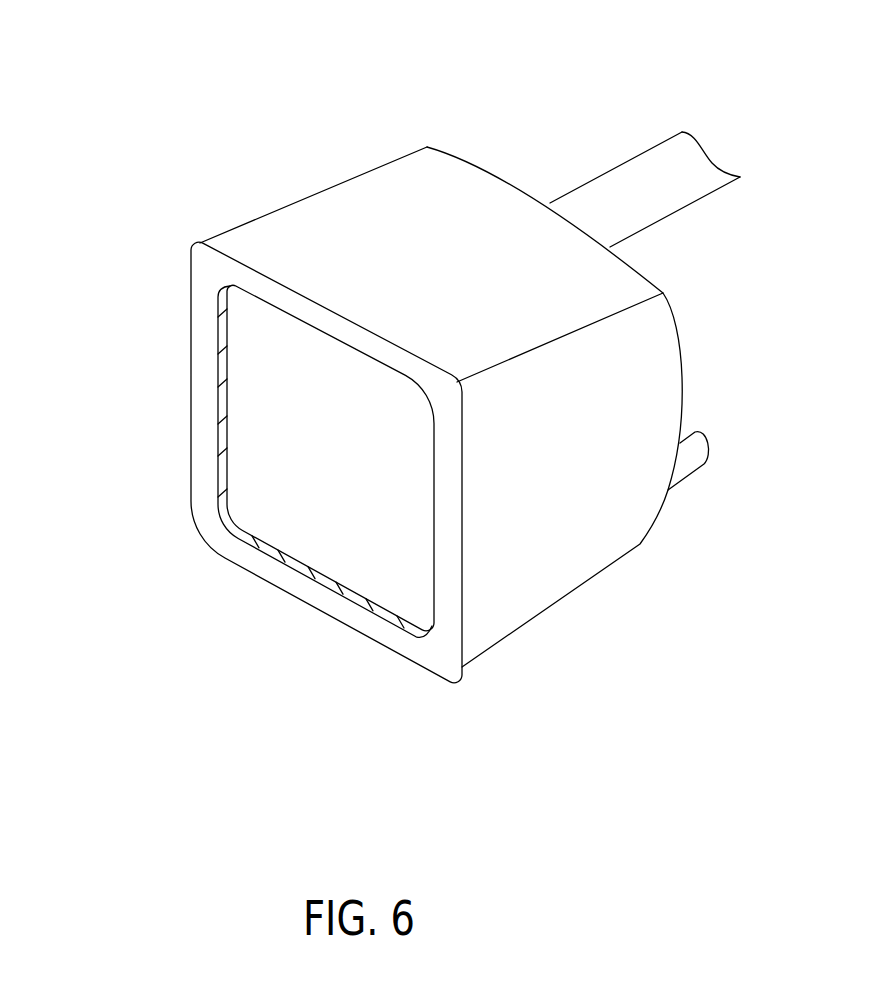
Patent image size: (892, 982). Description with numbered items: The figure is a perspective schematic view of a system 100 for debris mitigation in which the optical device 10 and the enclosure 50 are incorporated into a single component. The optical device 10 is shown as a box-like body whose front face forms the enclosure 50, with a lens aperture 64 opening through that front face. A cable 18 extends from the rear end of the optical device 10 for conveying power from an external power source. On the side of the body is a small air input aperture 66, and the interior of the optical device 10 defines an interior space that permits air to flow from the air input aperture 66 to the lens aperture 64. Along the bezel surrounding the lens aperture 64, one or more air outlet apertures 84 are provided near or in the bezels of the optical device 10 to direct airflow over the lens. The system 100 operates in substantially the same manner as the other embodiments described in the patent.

The optical device 10 is at (527, 600).
The cable 18 is at (640, 175).
The enclosure 50 is at (279, 167).
The lens aperture 64 is at (250, 510).
The air input aperture 66 is at (736, 440).
The air outlet apertures 84 is at (203, 457).
The system for debris mitigation 100 is at (436, 366).